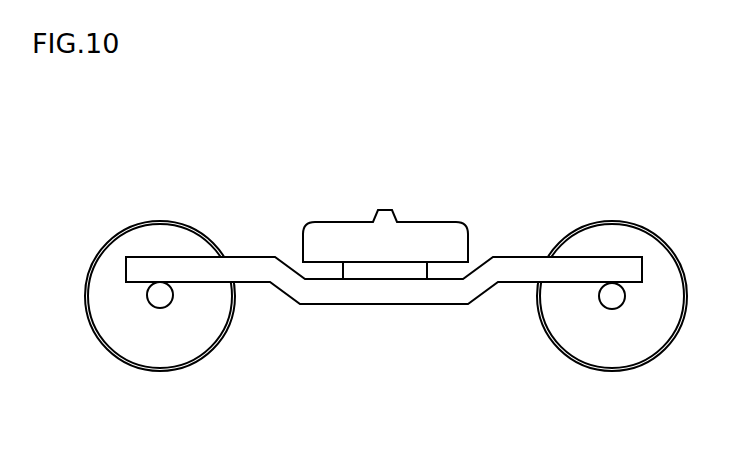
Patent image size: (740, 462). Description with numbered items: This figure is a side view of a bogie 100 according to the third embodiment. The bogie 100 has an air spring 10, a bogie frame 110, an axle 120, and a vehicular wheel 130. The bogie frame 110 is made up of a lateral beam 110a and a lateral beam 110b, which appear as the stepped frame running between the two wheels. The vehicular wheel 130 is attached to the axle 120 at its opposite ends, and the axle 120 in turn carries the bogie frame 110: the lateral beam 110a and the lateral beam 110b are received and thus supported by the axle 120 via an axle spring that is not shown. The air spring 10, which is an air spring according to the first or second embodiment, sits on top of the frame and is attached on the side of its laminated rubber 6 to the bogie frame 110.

The bogie 100 is at (608, 198).
The air spring 10 is at (385, 202).
The laminated rubber 6 is at (362, 270).
The bogie frame 110 is at (384, 340).
The lateral beam 110a is at (267, 273).
The lateral beam 110b is at (513, 313).
The axle 120 is at (160, 305).
The vehicular wheel 130 is at (208, 323).